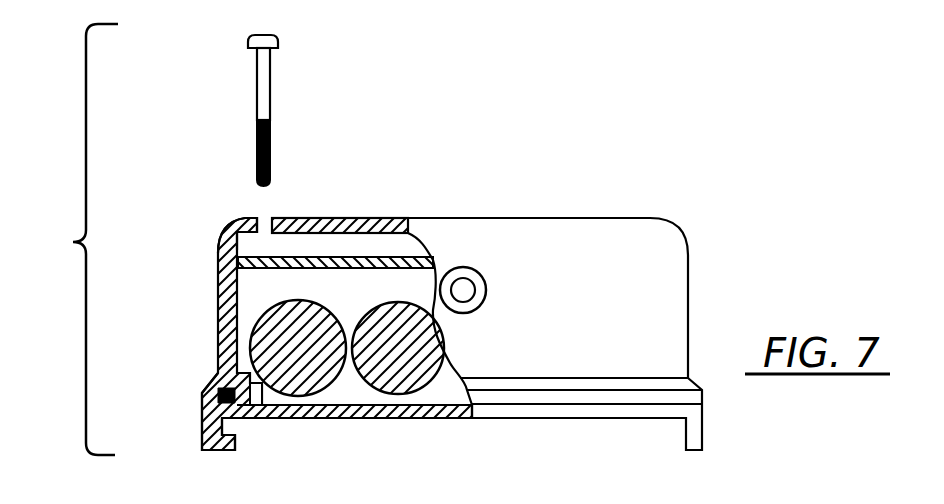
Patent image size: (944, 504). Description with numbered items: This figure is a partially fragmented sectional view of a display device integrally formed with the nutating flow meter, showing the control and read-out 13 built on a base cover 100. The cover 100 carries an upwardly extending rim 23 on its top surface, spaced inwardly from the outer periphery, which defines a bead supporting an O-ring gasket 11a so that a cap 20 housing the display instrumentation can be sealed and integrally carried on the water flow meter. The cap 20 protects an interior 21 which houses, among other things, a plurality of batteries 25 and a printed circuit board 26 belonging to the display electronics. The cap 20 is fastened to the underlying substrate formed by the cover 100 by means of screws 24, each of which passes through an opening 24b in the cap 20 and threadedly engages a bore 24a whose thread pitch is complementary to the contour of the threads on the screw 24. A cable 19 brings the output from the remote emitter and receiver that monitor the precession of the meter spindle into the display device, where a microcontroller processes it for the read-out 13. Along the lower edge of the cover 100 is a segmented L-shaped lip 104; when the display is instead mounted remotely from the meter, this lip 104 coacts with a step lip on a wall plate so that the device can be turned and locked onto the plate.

The control and read-out 13 is at (74, 239).
The screw 24 is at (268, 103).
The opening 24b is at (265, 222).
The printed circuit board 26 is at (363, 258).
The cable 19 is at (465, 268).
The cap 20 is at (218, 250).
The interior 21 is at (262, 293).
The bore 24a is at (258, 382).
The O-ring gasket 11a is at (218, 395).
The batteries 25 is at (313, 398).
The rim 23 is at (253, 413).
The base cover 100 is at (412, 420).
The segmented L-shaped lip 104 is at (222, 450).